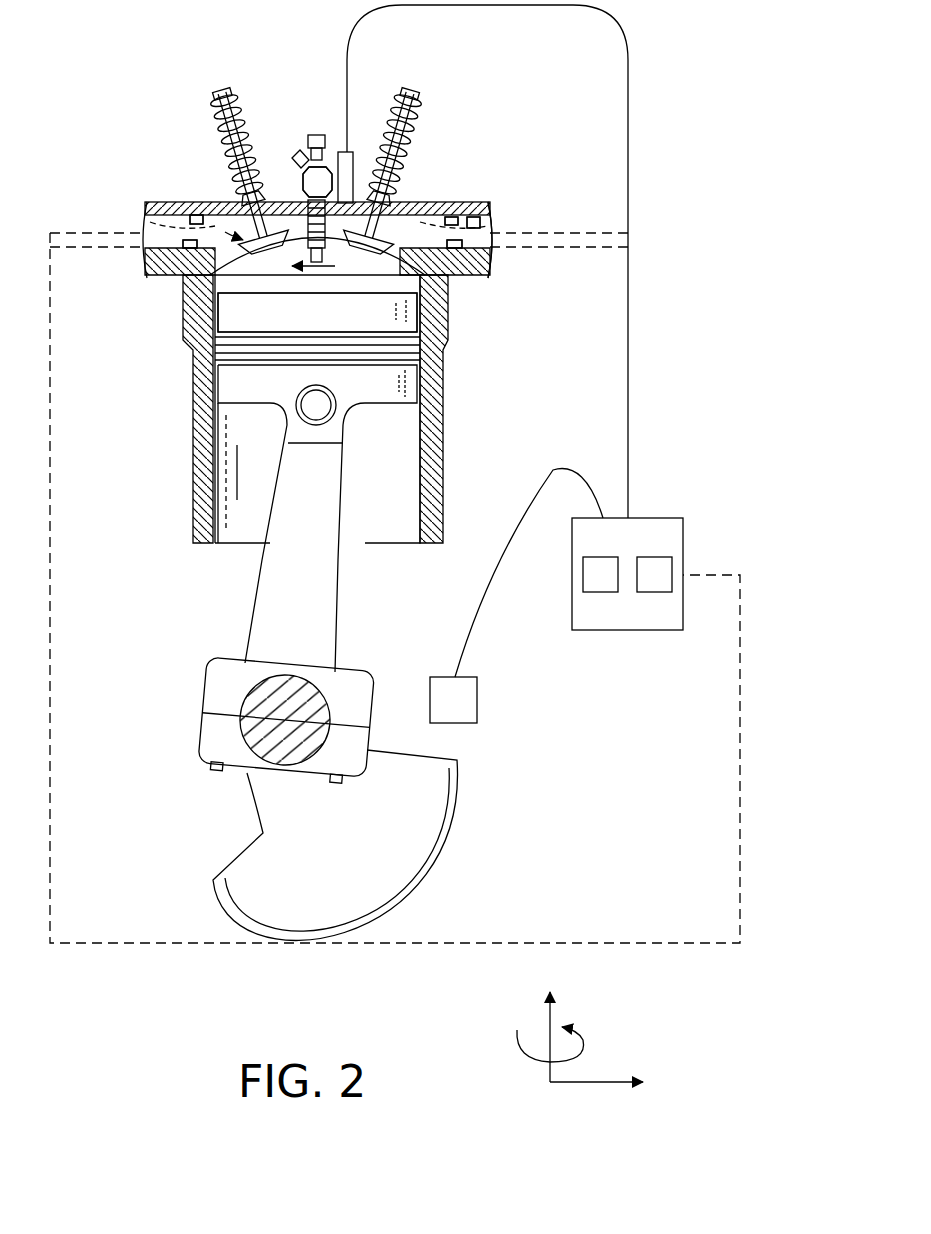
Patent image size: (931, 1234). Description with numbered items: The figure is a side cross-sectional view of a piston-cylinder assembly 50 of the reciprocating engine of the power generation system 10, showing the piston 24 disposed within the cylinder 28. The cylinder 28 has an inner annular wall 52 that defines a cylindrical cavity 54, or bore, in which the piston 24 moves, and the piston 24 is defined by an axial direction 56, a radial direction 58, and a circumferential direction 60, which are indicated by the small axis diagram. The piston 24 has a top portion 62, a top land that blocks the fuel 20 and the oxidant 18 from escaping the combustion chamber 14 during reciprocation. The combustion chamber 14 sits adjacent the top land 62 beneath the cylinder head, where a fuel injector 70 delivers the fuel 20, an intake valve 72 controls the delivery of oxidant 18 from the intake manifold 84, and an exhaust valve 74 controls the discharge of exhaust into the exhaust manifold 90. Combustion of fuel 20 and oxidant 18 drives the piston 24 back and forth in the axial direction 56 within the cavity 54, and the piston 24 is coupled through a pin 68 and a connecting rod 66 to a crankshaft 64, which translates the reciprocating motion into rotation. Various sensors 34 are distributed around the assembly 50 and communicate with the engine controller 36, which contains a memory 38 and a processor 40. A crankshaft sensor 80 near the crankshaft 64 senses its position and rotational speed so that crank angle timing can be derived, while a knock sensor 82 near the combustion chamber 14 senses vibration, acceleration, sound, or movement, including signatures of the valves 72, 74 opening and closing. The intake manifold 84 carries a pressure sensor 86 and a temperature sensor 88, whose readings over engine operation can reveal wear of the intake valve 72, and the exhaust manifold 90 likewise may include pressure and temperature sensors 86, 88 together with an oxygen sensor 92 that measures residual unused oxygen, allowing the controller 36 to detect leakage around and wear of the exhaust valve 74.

The engine driven power generation system 10 is at (528, 112).
The combustion chamber 14 is at (430, 214).
The oxidant 18 is at (243, 240).
The fuel 20 is at (317, 128).
The piston 24 is at (388, 397).
The cylinder 28 is at (193, 437).
The sensors 34 is at (315, 387).
The engine controller 36 is at (644, 585).
The memory 38 is at (655, 592).
The processor 40 is at (600, 592).
The piston-cylinder assembly 50 is at (358, 510).
The inner annular wall 52 is at (214, 490).
The cylindrical cavity 54 is at (262, 533).
The axial direction 56 is at (548, 1018).
The radial direction 58 is at (592, 1082).
The circumferential direction 60 is at (578, 1055).
The top portion 62 is at (372, 318).
The crankshaft 64 is at (258, 858).
The connecting rod 66 is at (311, 605).
The pin 68 is at (320, 415).
The fuel injector 70 is at (327, 150).
The intake valve 72 is at (224, 90).
The exhaust valve 74 is at (412, 92).
The crankshaft sensor 80 is at (478, 704).
The knock sensor 82 is at (356, 160).
The intake manifold 84 is at (125, 214).
The pressure sensor 86 is at (185, 221).
The temperature sensor 88 is at (185, 262).
The exhaust manifold 90 is at (497, 211).
The oxygen sensor 92 is at (470, 230).